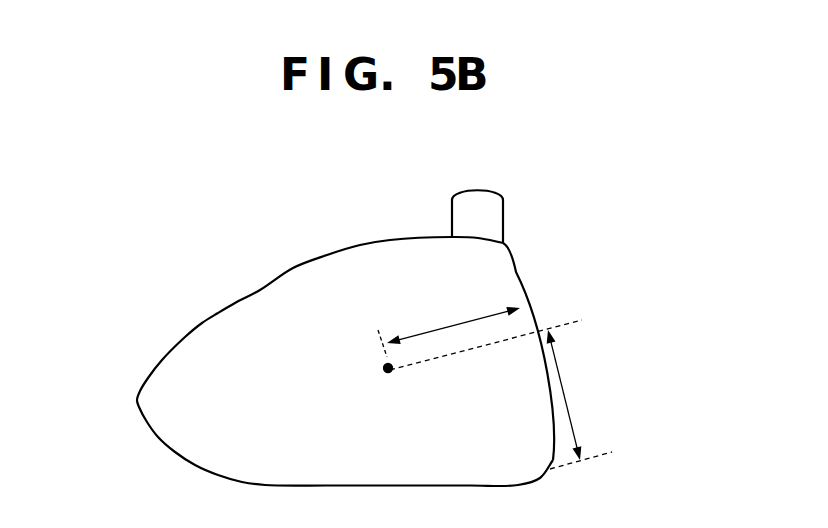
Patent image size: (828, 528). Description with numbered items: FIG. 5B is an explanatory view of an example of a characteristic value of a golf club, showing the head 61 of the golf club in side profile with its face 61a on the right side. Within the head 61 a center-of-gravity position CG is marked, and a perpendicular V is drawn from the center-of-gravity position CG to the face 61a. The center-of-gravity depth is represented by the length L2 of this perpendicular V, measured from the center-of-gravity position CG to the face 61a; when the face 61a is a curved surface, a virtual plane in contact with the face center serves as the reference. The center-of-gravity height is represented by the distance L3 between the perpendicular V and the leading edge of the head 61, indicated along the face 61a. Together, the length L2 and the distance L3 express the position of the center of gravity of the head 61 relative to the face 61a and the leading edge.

The head 61 is at (350, 338).
The face 61a is at (520, 273).
The center-of-gravity position CG is at (383, 377).
The perpendicular V is at (477, 347).
The length L2 is at (453, 317).
The distance L3 is at (576, 395).